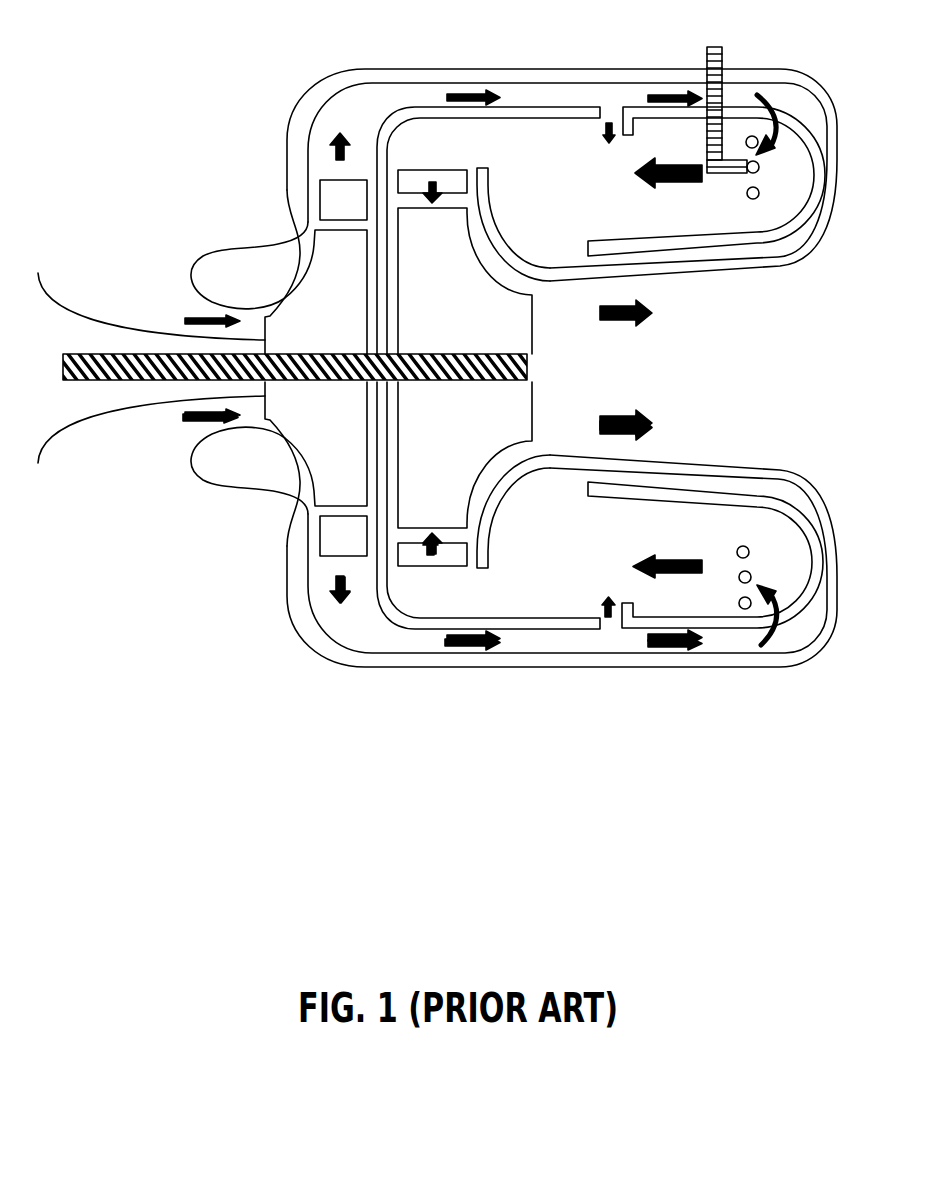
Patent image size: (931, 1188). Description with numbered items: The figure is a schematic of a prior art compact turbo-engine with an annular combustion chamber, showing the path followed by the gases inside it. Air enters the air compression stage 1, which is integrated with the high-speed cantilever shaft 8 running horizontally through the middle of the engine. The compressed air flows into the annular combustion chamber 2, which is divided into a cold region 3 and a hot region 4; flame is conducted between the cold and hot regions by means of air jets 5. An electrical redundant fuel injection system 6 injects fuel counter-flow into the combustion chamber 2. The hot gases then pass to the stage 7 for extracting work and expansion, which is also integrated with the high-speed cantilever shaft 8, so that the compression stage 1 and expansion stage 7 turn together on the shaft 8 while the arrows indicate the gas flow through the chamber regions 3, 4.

The air compression stage 1 is at (322, 292).
The annular combustion chamber 2 is at (632, 667).
The cold region 3 is at (522, 635).
The hot region 4 is at (678, 208).
The air jets 5 is at (615, 618).
The electrical redundant fuel injection system 6 is at (722, 53).
The stage for extracting work and expansion 7 is at (488, 417).
The high-speed cantilever shaft 8 is at (187, 373).